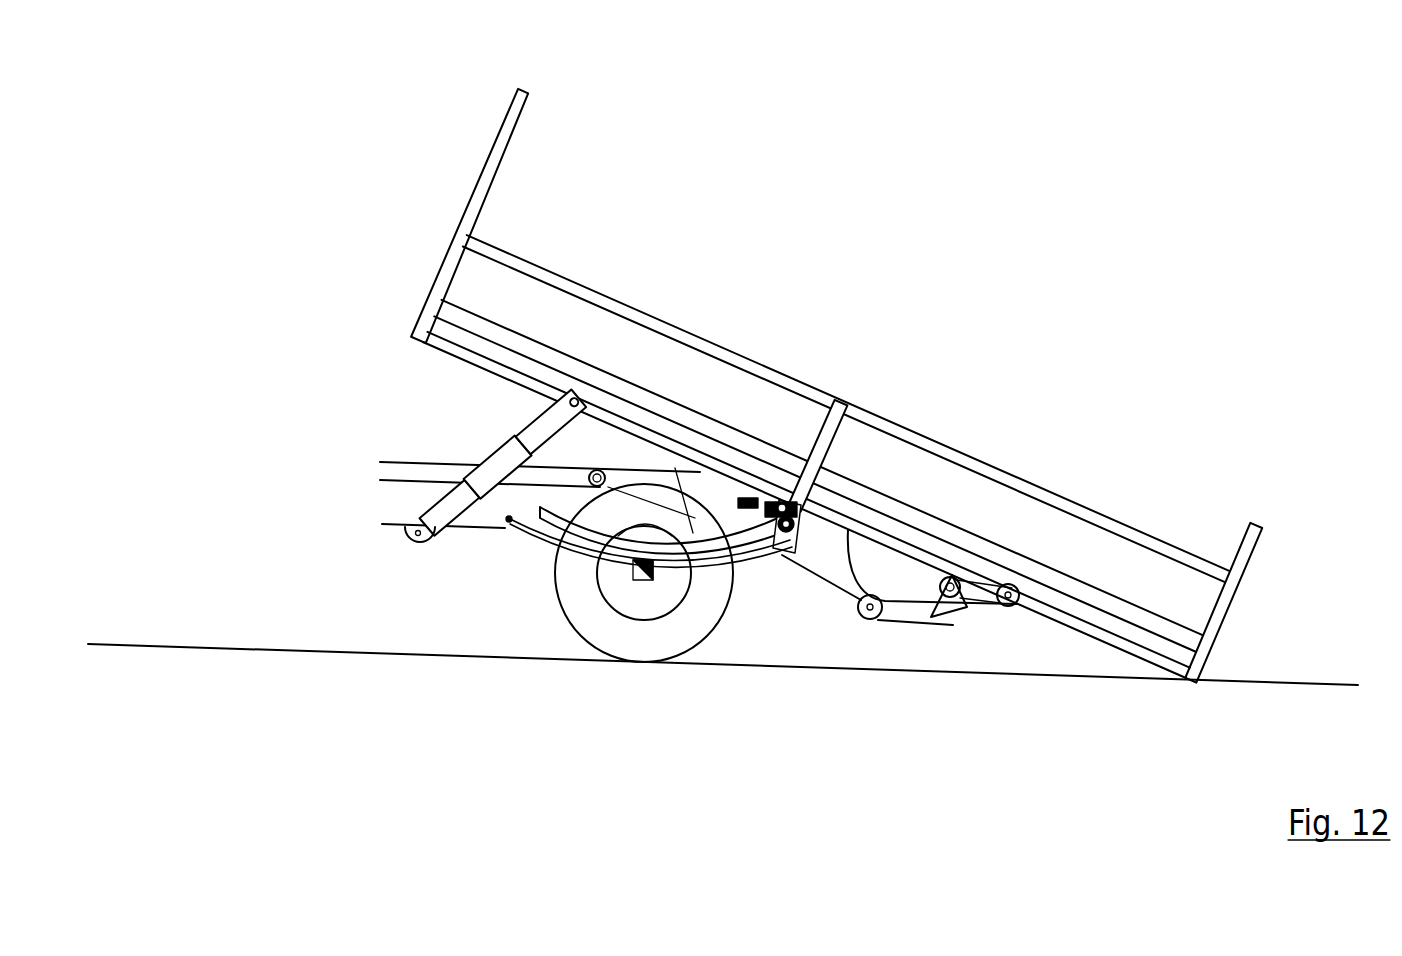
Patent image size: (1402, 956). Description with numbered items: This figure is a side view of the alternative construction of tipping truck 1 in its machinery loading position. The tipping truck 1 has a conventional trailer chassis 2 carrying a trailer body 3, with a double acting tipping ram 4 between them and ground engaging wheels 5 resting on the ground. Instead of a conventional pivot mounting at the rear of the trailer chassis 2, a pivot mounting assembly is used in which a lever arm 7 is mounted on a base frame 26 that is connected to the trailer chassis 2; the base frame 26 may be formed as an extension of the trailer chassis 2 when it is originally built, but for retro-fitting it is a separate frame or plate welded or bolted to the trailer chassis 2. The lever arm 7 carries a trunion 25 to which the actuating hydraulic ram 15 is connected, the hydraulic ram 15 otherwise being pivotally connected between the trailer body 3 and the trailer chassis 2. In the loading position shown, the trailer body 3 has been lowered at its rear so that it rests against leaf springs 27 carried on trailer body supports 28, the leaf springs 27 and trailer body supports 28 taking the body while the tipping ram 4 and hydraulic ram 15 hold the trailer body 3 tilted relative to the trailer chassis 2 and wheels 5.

The tipping truck 1 is at (343, 243).
The trailer chassis 2 is at (398, 513).
The trailer body 3 is at (620, 312).
The double acting tipping ram 4 is at (518, 437).
The ground engaging wheels 5 is at (653, 603).
The lever arm 7 is at (907, 612).
The hydraulic ram 15 is at (654, 504).
The trunion 25 is at (945, 603).
The base frame 26 is at (837, 588).
The leaf springs 27 is at (537, 532).
The trailer body supports 28 is at (815, 474).